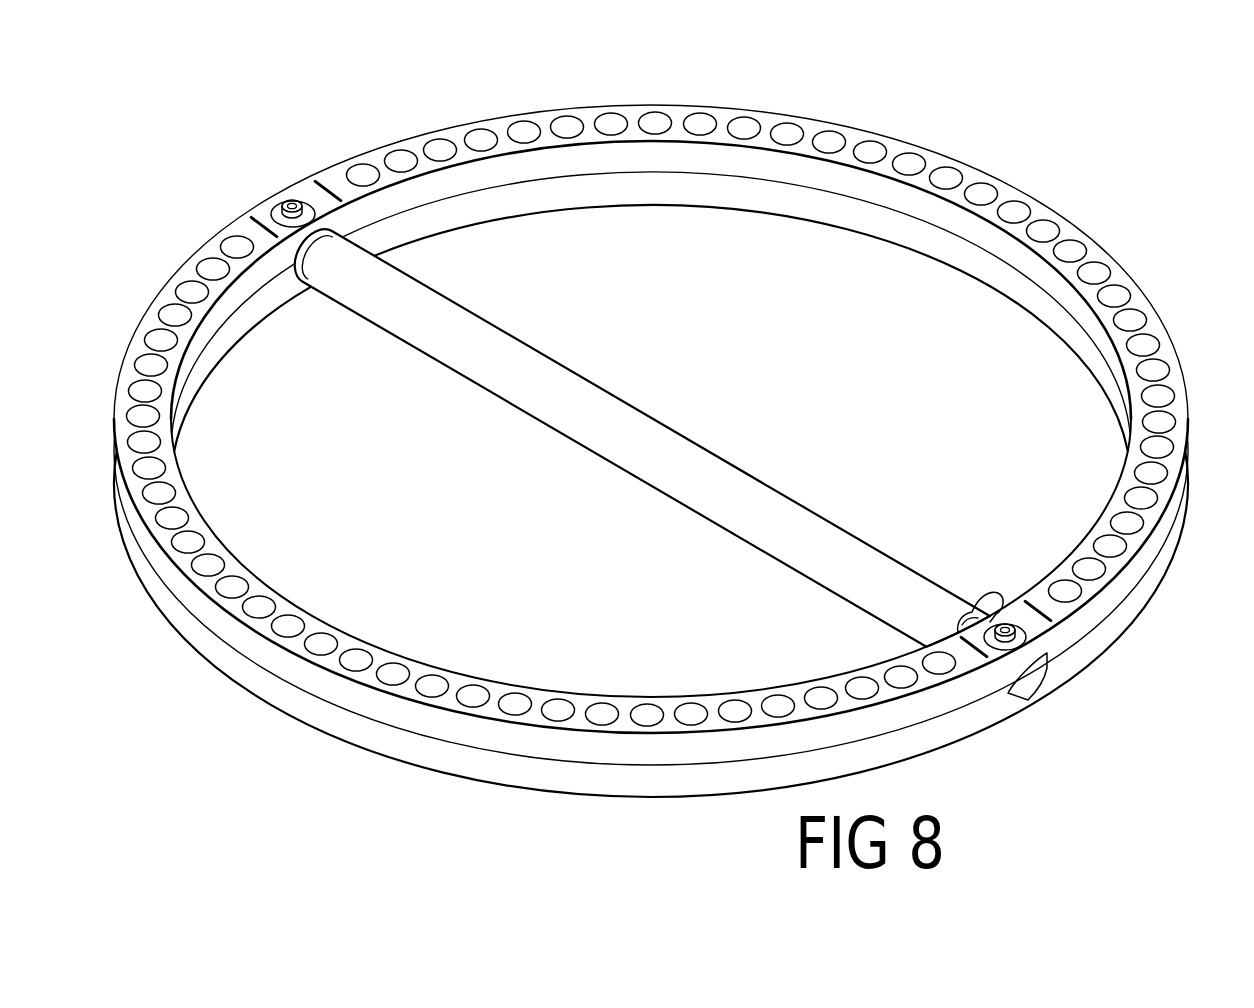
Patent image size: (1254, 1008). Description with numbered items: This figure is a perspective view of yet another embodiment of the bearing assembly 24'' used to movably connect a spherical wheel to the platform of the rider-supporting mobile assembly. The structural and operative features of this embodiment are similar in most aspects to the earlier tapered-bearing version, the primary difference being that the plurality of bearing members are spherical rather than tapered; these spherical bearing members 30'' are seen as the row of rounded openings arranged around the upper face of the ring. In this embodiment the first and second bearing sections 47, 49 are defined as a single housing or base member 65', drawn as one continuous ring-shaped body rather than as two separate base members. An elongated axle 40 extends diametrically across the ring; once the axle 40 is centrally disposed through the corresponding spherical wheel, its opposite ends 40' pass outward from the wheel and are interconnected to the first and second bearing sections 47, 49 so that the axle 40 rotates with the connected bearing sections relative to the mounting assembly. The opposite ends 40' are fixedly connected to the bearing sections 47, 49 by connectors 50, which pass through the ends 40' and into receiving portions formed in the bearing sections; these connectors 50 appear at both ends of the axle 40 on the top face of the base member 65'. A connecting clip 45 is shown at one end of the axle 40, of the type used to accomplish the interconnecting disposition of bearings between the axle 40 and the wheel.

The bearing assembly 24'' is at (667, 426).
The holes 30'' is at (651, 392).
The axle 40 is at (642, 437).
The ends of the axle 40' is at (1074, 710).
The connecting clips 45 is at (993, 600).
The first bearing section 47 is at (651, 632).
The second bearing section 49 is at (915, 742).
The connectors 50 is at (292, 200).
The housing or base member 65' is at (667, 600).